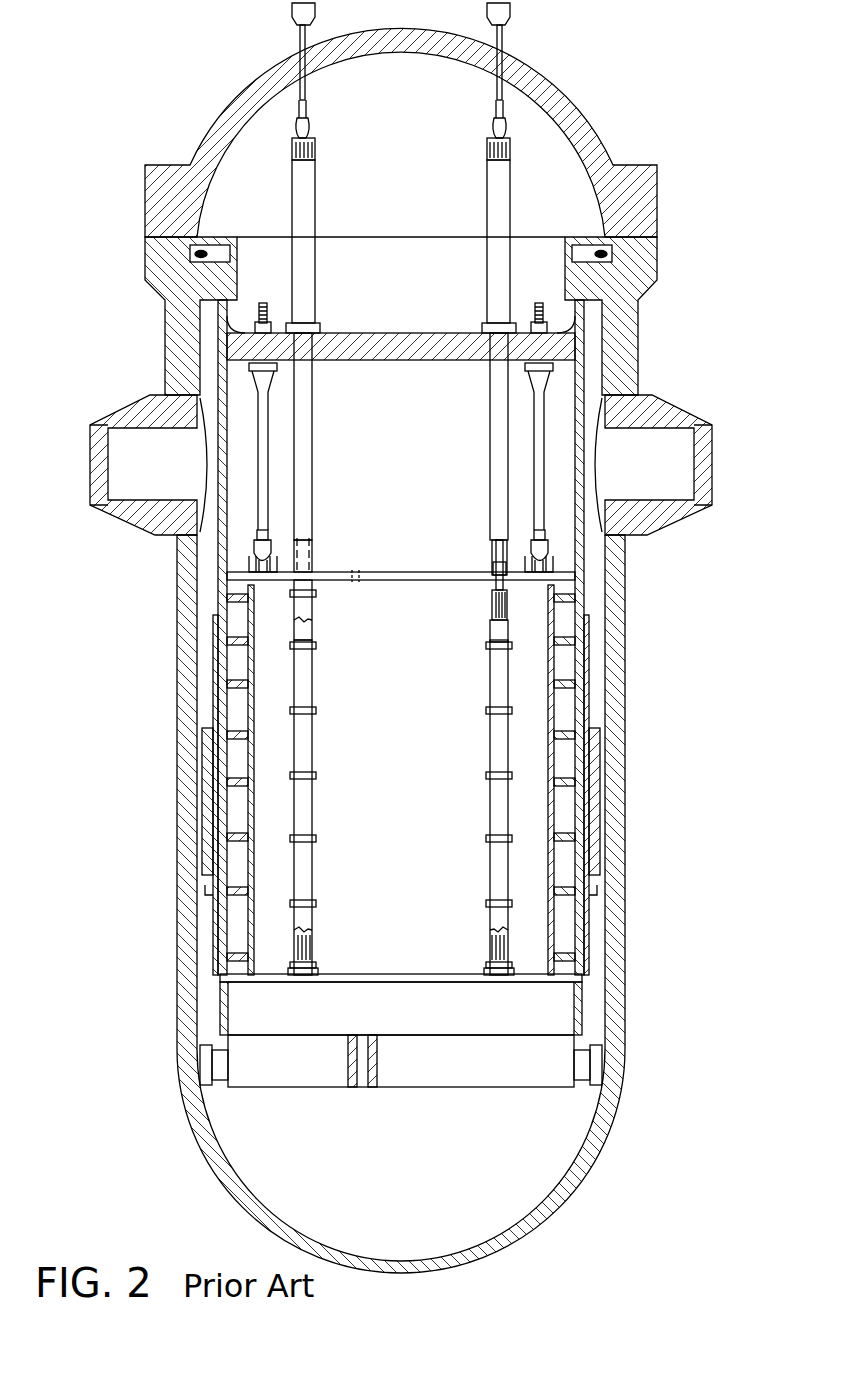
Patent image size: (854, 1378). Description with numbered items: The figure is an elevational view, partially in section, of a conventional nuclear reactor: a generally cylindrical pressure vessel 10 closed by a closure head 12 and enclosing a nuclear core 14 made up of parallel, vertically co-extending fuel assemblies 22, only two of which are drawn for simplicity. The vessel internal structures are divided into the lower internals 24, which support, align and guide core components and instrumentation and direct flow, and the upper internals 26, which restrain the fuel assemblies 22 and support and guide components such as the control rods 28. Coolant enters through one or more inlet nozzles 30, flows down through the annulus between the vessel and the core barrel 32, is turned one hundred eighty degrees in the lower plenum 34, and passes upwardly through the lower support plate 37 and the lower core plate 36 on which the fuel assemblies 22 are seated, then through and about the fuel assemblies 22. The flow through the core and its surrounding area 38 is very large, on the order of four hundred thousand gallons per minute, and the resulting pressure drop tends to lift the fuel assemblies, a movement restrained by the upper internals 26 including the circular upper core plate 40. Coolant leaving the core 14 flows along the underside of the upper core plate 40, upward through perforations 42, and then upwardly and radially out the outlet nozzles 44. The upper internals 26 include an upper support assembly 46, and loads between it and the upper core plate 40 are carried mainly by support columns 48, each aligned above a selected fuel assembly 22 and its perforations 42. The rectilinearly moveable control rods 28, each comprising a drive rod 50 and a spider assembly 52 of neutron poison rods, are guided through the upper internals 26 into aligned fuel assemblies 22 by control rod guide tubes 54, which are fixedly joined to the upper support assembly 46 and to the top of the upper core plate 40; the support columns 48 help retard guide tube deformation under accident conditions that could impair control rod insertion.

The pressure vessel 10 is at (625, 640).
The closure head 12 is at (657, 200).
The nuclear core 14 is at (422, 768).
The fuel assemblies 22 is at (313, 683).
The lower internals 24 is at (420, 1016).
The upper internals 26 is at (422, 436).
The control rods 28 is at (492, 605).
The inlet nozzles 30 is at (132, 393).
The core barrel 32 is at (216, 570).
The lower plenum 34 is at (570, 1140).
The lower core plate 36 is at (470, 975).
The lower support plate 37 is at (445, 1075).
The core surrounding area 38 is at (453, 752).
The upper core plate 40 is at (440, 580).
The perforations 42 is at (355, 572).
The outlet nozzles 44 is at (672, 410).
The upper support assembly 46 is at (576, 237).
The support columns 48 is at (270, 460).
The drive rod 50 is at (497, 548).
The spider assembly 52 is at (490, 573).
The control rod guide tubes 54 is at (312, 405).